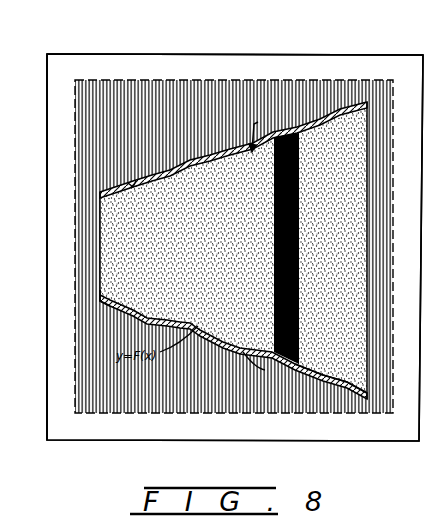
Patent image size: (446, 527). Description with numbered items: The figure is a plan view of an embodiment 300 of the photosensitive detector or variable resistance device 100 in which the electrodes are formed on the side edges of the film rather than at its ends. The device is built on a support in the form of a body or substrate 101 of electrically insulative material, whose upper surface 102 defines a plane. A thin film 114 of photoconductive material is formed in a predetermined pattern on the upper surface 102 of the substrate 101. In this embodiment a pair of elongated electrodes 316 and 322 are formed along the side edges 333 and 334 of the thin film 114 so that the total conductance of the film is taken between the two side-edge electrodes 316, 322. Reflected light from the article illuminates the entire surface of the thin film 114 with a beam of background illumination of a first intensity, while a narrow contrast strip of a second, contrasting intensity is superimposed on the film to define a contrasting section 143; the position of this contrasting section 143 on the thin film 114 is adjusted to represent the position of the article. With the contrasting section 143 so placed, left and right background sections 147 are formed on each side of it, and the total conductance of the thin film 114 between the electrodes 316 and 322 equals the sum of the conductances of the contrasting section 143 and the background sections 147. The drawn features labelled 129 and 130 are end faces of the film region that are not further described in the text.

The photosensitive detector 100 is at (248, 45).
The substrate 101 is at (47, 124).
The upper surface 102 is at (63, 72).
The thin film 114 is at (362, 371).
The left end face 129 is at (99, 270).
The right end face 130 is at (368, 252).
The contrasting section 143 is at (268, 243).
The background sections 147 is at (241, 197).
The embodiment 300 is at (364, 51).
The electrode 316 is at (100, 194).
The electrode 322 is at (104, 303).
The side edge 333 is at (132, 183).
The side edge 334 is at (100, 292).